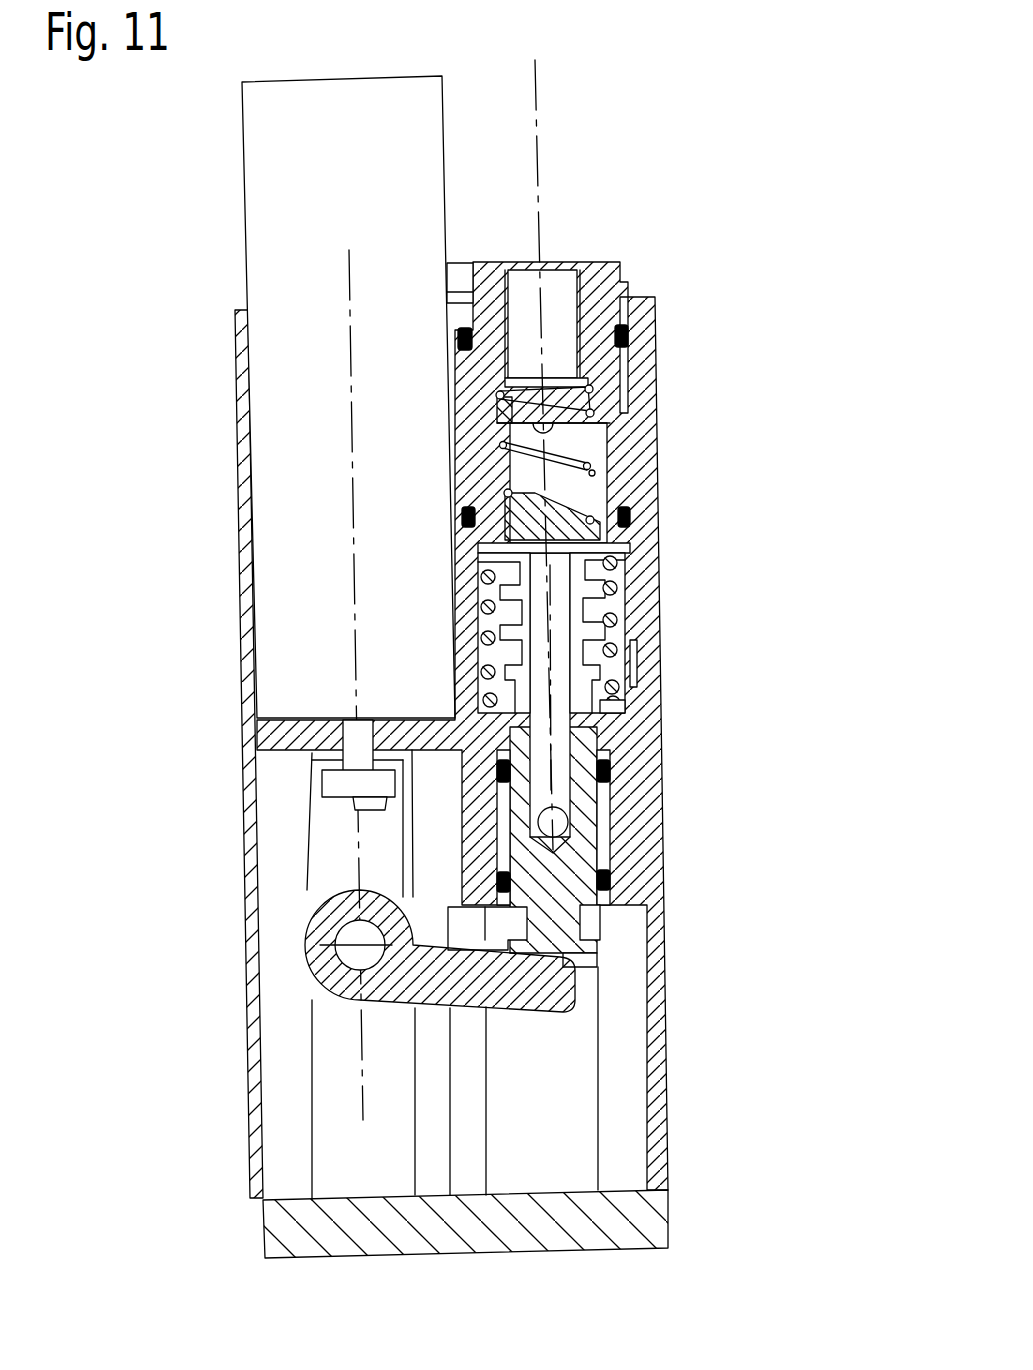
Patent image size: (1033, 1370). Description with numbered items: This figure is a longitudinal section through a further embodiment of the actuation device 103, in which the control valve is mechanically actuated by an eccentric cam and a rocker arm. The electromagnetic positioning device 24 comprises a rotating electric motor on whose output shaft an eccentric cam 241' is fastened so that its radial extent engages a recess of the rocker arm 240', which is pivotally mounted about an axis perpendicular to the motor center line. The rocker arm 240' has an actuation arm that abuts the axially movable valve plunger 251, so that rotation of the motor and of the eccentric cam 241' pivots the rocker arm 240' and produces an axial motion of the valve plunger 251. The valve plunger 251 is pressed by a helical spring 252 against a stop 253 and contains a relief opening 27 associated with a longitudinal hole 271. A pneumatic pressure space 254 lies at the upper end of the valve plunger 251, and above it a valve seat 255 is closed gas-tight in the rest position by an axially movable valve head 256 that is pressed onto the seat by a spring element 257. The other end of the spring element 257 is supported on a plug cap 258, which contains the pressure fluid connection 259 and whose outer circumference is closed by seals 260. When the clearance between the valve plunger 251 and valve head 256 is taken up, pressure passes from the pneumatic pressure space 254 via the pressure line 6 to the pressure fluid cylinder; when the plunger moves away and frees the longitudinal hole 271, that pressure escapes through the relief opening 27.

The actuation device 103 is at (706, 112).
The electromagnetic positioning device 24 is at (208, 357).
The pressure fluid connection 259 is at (558, 233).
The seals 260 is at (462, 517).
The plug cap 258 is at (612, 360).
The spring element 257 is at (588, 464).
The valve head 256 is at (572, 514).
The valve seat 255 is at (623, 537).
The pneumatic pressure space 254 is at (600, 610).
The helical spring 252 is at (635, 650).
The pressure line 6 is at (614, 700).
The stop 253 is at (627, 708).
The valve plunger 251 is at (600, 746).
The longitudinal hole 271 is at (558, 800).
The relief opening 27 is at (556, 823).
The eccentric cam 241' is at (240, 750).
The rocker arm 240' is at (342, 975).